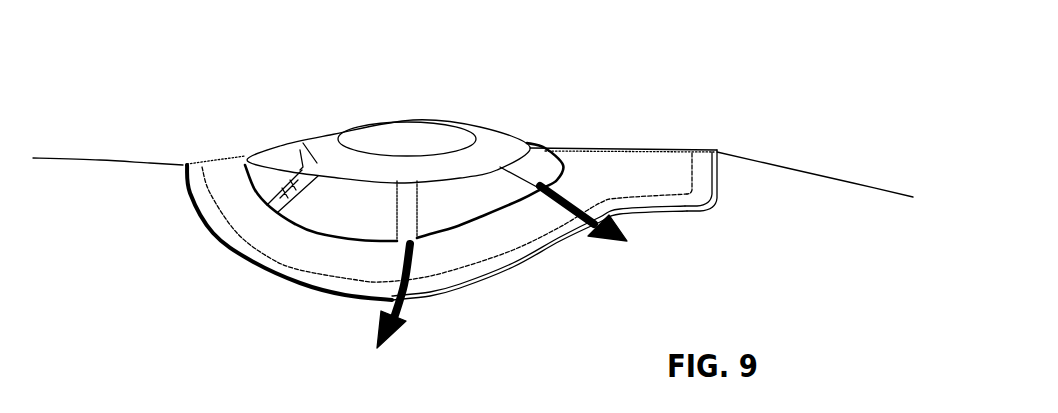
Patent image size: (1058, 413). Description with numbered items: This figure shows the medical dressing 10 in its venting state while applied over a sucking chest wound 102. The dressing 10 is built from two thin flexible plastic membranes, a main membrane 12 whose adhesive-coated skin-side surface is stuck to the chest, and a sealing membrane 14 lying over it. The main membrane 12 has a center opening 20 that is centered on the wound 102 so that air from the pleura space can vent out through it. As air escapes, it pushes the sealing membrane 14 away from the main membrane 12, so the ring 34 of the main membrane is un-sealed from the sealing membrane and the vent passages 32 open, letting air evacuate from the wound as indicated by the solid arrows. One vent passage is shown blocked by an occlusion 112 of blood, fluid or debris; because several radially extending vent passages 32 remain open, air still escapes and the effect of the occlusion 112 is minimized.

The medical dressing 10 is at (248, 124).
The main membrane 12 is at (657, 172).
The sealing membrane 14 is at (368, 140).
The center opening 20 is at (527, 242).
The vent passages 32 is at (520, 175).
The ring 34 is at (304, 147).
The wound 102 is at (447, 80).
The occlusion 112 is at (293, 215).